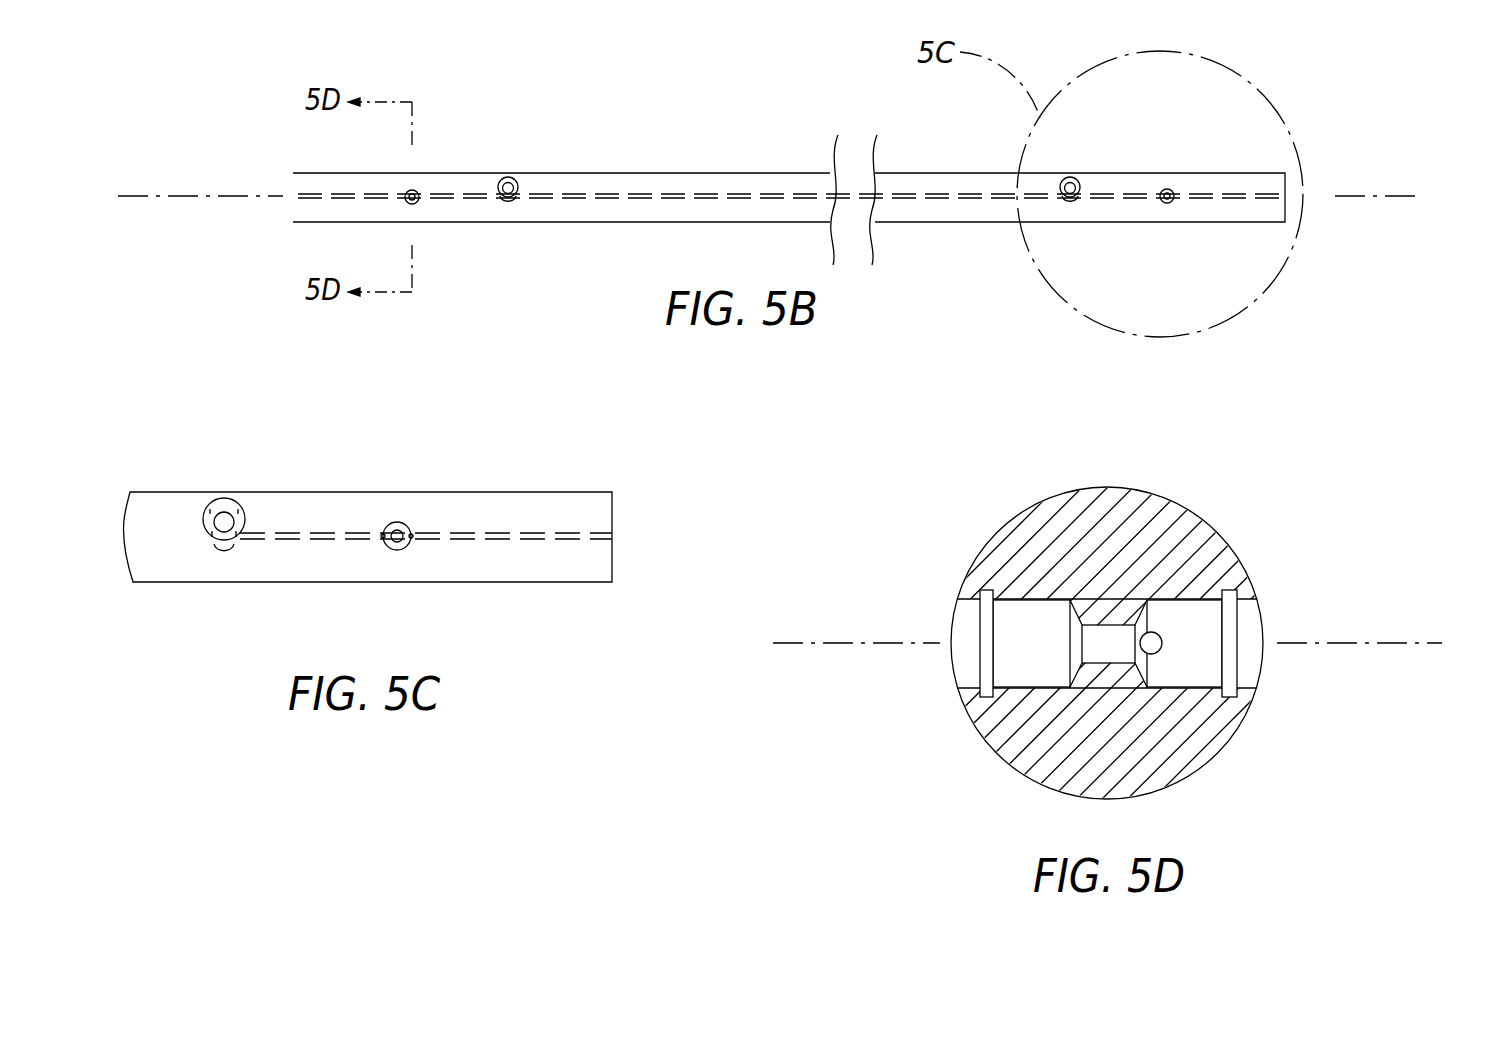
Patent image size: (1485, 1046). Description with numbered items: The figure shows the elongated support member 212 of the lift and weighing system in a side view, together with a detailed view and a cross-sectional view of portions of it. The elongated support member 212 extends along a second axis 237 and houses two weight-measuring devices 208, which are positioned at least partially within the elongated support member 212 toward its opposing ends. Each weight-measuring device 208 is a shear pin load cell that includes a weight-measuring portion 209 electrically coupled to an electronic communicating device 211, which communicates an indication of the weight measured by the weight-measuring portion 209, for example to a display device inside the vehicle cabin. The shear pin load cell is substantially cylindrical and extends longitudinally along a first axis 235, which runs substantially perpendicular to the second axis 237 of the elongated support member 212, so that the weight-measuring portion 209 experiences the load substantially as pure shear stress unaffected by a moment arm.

In FIG. 5B, the weight-measuring device 208 is at (505, 110).
In FIG. 5B, the weight-measuring portion 209 is at (418, 201).
In FIG. 5C, the weight-measuring portion 209 is at (397, 522).
In FIG. 5D, the weight-measuring portion 209 is at (1023, 690).
In FIG. 5B, the electronic communicating device 211 is at (516, 193).
In FIG. 5C, the electronic communicating device 211 is at (224, 512).
In FIG. 5B, the elongated support member 212 is at (663, 173).
In FIG. 5C, the elongated support member 212 is at (535, 492).
In FIG. 5D, the first axis 235 is at (1357, 642).
In FIG. 5B, the second axis 237 is at (197, 196).